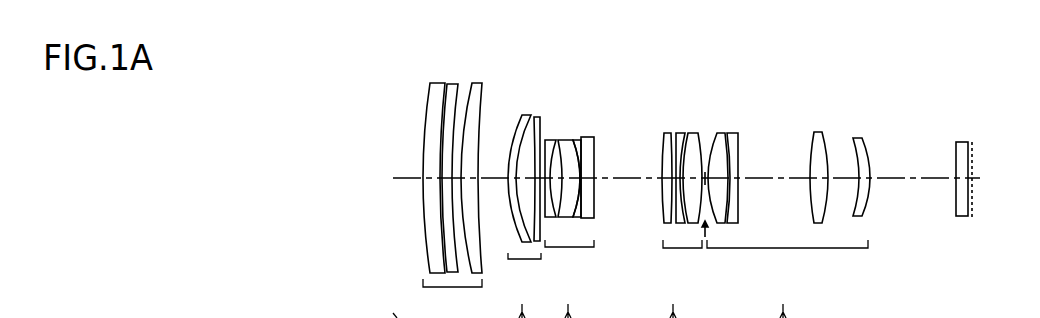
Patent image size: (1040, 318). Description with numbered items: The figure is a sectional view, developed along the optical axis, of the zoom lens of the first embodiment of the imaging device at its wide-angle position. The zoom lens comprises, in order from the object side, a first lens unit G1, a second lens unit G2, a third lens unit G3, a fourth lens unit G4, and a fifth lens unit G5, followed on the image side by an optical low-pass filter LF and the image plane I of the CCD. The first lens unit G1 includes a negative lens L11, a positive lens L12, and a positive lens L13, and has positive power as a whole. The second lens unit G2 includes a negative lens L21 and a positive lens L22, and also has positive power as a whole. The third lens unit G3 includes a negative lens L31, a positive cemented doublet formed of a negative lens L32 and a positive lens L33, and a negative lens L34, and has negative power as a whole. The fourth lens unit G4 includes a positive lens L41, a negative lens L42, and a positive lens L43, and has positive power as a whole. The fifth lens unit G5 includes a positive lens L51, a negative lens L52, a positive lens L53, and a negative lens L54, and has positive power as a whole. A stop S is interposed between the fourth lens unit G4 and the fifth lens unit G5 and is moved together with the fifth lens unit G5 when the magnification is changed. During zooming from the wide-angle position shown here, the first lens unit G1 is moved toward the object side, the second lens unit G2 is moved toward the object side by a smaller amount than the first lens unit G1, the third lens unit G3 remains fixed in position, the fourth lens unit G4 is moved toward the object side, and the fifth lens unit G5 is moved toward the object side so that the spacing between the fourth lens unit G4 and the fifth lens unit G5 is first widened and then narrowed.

The first lens unit G1 is at (452, 298).
The second lens unit G2 is at (524, 272).
The third lens unit G3 is at (569, 258).
The fourth lens unit G4 is at (682, 259).
The fifth lens unit G5 is at (787, 259).
The negative lens L11 is at (434, 83).
The positive lens L12 is at (452, 84).
The positive lens L13 is at (478, 83).
The negative lens L21 is at (528, 114).
The positive lens L22 is at (538, 117).
The negative lens L31 is at (553, 140).
The negative lens L32 is at (571, 140).
The positive lens L33 is at (580, 140).
The negative lens L34 is at (591, 137).
The positive lens L41 is at (666, 133).
The negative lens L42 is at (681, 133).
The positive lens L43 is at (692, 133).
The stop S is at (705, 132).
The positive lens L51 is at (720, 133).
The negative lens L52 is at (732, 133).
The positive lens L53 is at (817, 132).
The negative lens L54 is at (857, 138).
The optical low-pass filter LF is at (960, 217).
The image plane I is at (973, 217).